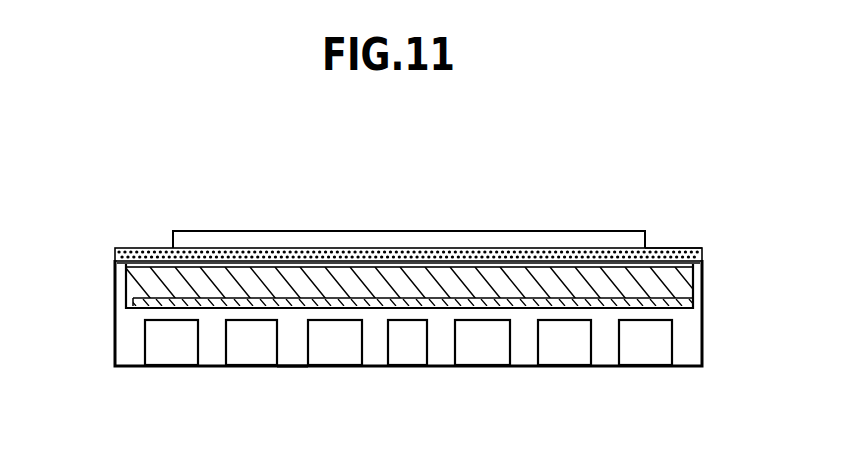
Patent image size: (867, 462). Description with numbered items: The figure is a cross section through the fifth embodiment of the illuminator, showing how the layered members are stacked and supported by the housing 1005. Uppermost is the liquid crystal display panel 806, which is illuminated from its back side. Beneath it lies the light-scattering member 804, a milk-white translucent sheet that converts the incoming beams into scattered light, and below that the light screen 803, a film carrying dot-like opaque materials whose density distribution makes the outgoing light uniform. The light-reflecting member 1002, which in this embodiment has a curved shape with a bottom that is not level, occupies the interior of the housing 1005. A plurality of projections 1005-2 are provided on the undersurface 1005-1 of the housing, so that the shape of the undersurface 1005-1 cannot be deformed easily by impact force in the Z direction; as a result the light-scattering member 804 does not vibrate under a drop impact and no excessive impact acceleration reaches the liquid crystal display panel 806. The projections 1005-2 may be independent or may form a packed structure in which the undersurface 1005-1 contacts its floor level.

The housing 1005 is at (692, 315).
The undersurface of the housing 1005-1 is at (250, 340).
The projections 1005-2 is at (300, 357).
The light-scattering member 804 is at (137, 248).
The liquid crystal display panel 806 is at (572, 240).
The light screen 803 is at (683, 250).
The light-reflecting member 1002 is at (148, 290).